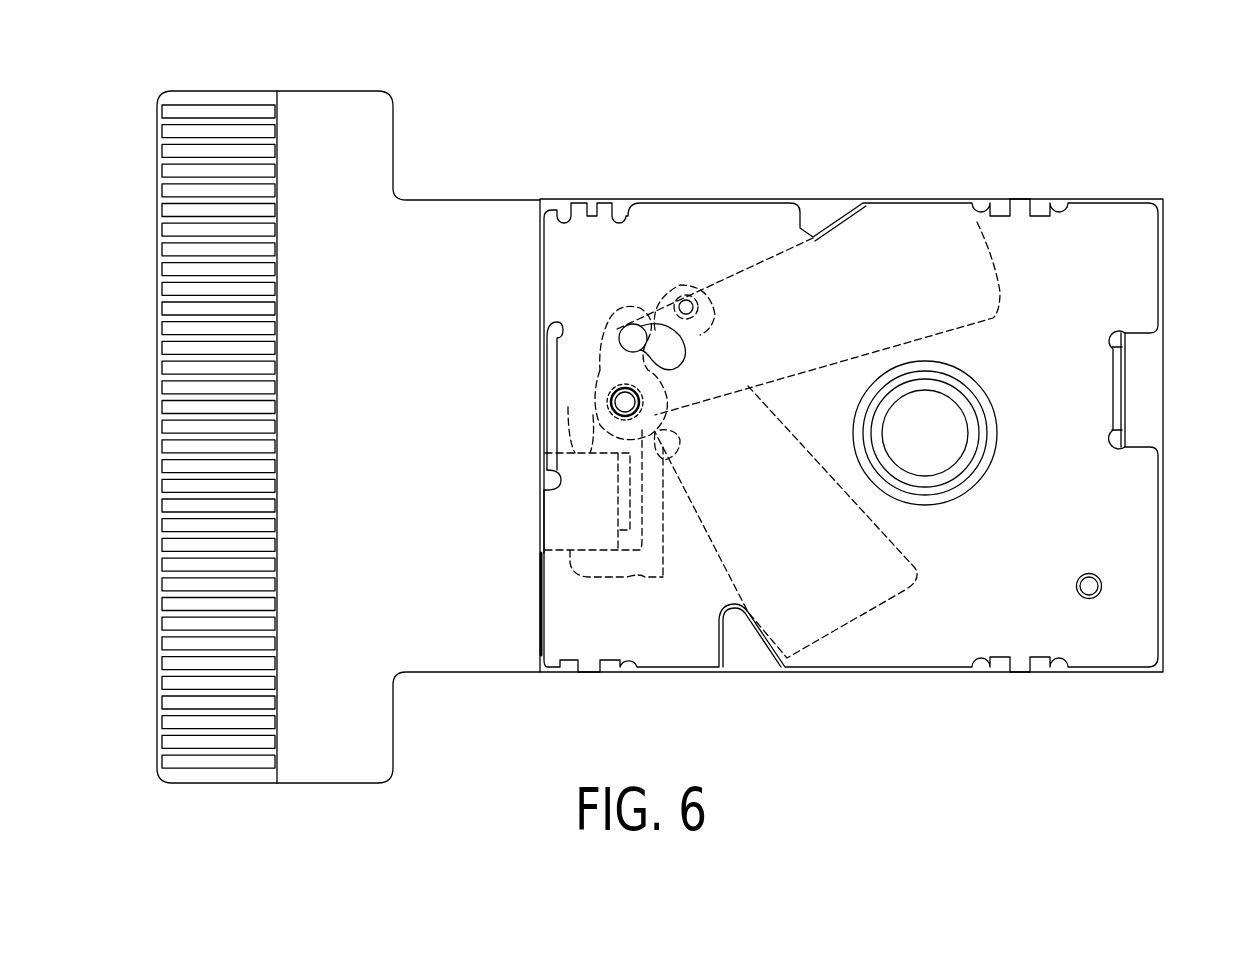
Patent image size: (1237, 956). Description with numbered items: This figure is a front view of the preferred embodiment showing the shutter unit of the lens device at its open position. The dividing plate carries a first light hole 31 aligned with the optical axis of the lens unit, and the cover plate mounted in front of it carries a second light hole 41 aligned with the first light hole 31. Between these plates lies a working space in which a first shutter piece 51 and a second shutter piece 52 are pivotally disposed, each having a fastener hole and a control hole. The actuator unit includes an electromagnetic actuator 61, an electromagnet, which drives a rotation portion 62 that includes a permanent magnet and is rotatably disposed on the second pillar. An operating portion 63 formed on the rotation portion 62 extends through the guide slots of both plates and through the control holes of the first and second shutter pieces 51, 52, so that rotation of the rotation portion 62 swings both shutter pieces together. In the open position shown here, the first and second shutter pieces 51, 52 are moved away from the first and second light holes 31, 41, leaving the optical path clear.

The first light hole 31 is at (982, 415).
The second light hole 41 is at (992, 463).
The first shutter piece 51 is at (856, 620).
The second shutter piece 52 is at (755, 275).
The electromagnetic actuator 61 is at (552, 560).
The rotation portion 62 is at (583, 397).
The operating portion 63 is at (632, 338).